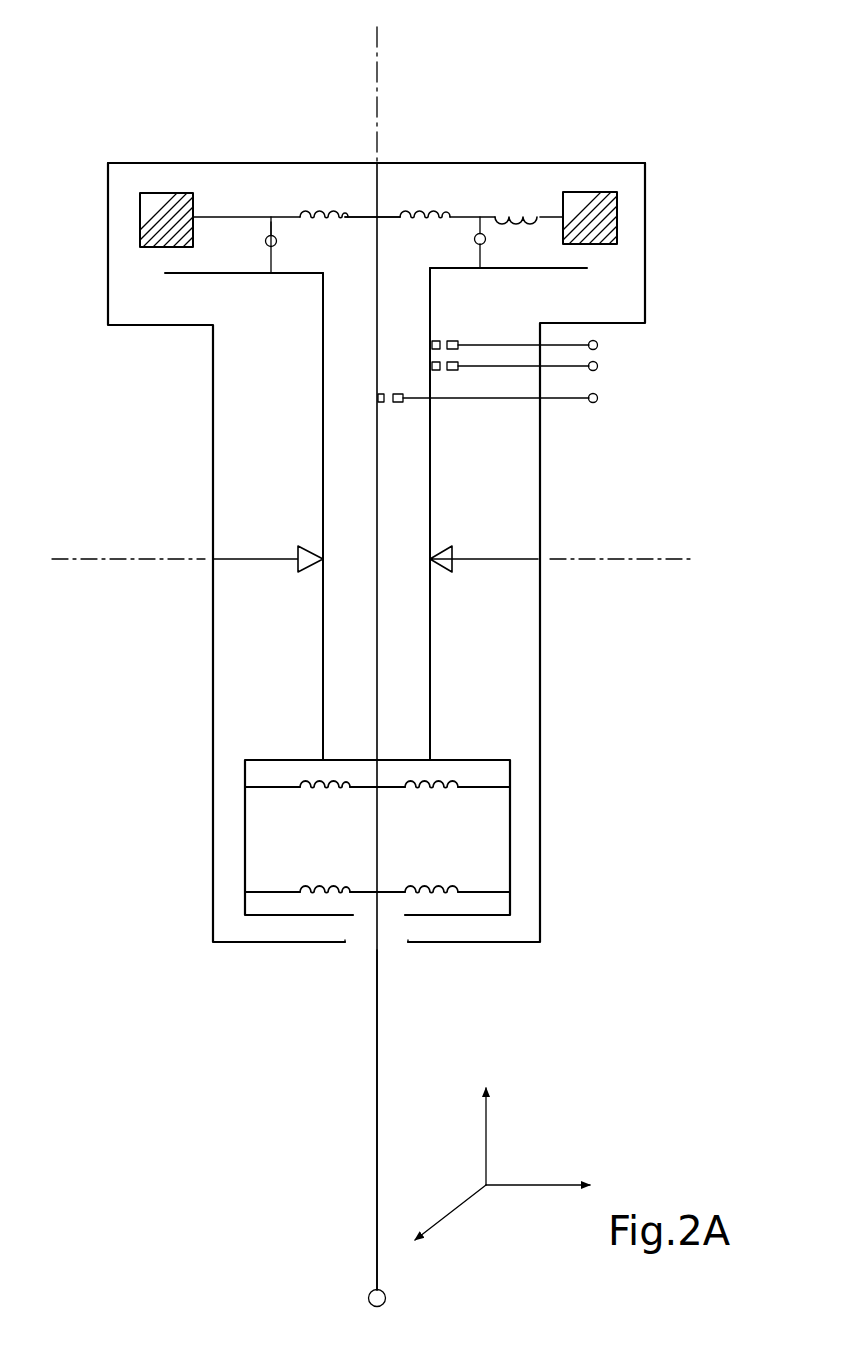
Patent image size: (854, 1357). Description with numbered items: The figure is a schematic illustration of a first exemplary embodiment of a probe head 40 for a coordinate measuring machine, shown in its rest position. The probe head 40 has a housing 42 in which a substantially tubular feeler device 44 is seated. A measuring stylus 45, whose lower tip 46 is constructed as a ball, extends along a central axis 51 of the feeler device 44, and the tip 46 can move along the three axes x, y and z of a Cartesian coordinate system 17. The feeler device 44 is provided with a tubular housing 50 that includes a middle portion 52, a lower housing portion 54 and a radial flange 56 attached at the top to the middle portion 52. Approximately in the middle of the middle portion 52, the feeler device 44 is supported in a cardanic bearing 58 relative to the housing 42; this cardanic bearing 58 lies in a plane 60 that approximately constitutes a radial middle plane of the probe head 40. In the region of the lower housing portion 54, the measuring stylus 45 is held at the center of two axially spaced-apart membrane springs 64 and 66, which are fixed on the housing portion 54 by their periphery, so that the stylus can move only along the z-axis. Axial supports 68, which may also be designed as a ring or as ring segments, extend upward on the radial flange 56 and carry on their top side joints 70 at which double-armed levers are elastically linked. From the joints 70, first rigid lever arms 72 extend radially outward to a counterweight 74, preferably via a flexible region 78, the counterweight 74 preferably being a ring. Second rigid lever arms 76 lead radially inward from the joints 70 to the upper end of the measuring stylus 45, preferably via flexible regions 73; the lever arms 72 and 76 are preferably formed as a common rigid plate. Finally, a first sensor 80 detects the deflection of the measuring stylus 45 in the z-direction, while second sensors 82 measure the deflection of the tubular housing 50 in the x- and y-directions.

The Cartesian coordinate system 17 is at (522, 1162).
The probe head 40 is at (398, 658).
The housing 42 is at (466, 163).
The feeler device 44 is at (393, 933).
The measuring stylus 45 is at (374, 1017).
The tip 46 is at (367, 1295).
The tubular housing 50 is at (432, 688).
The central axis 51 is at (383, 42).
The middle portion 52 is at (432, 622).
The lower housing portion 54 is at (510, 832).
The radial flange 56 is at (563, 270).
The cardanic bearing 58 is at (445, 546).
The plane 60 is at (647, 557).
The membrane spring 64 is at (283, 789).
The membrane spring 66 is at (468, 890).
The axial supports 68 is at (278, 257).
The joints 70 is at (264, 245).
The first rigid lever arms 72 is at (233, 217).
The flexible regions 73 is at (328, 217).
The counterweight 74 is at (165, 193).
The second rigid lever arms 76 is at (296, 217).
The flexible region 78 is at (532, 210).
The first sensor 80 is at (388, 403).
The second sensors 82 is at (458, 350).